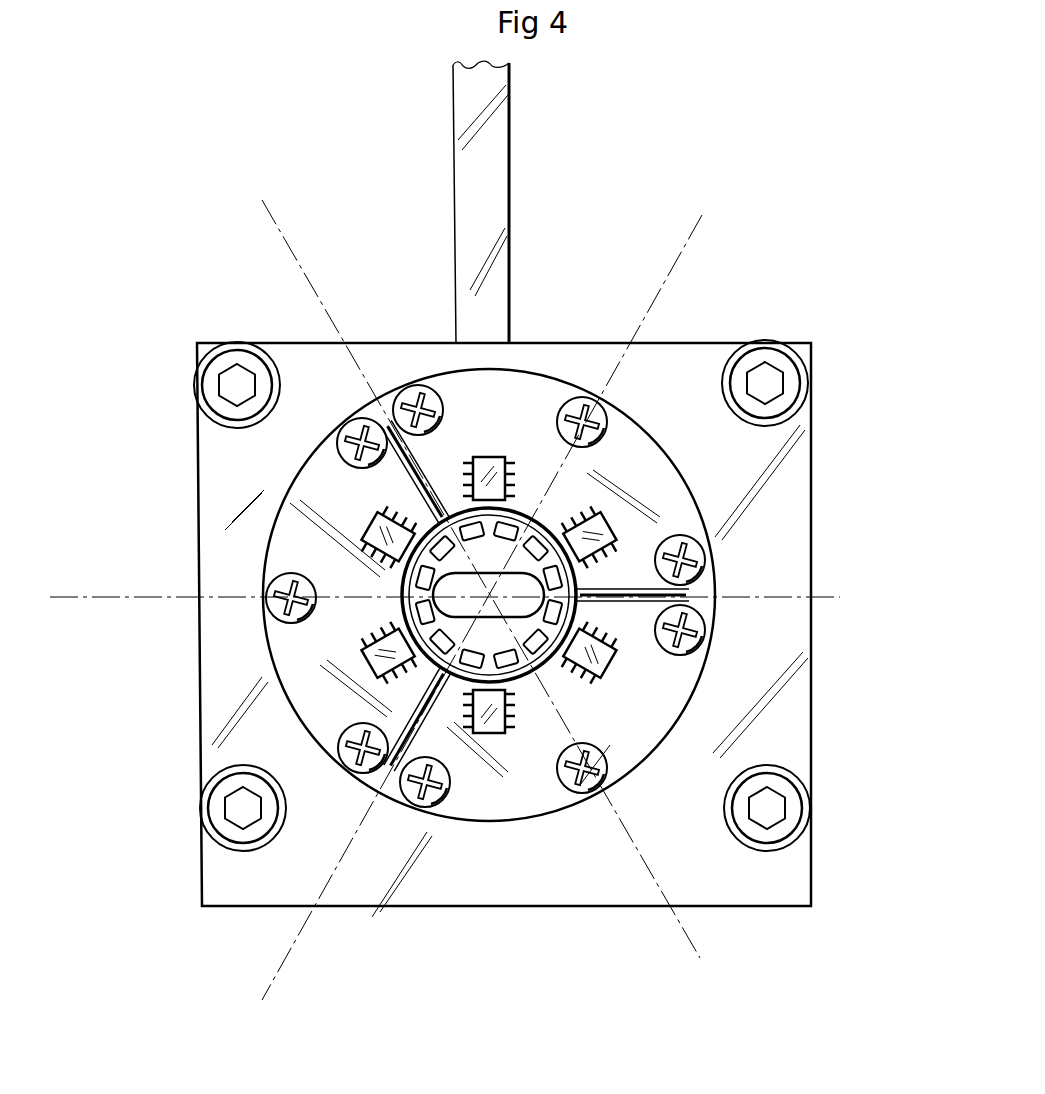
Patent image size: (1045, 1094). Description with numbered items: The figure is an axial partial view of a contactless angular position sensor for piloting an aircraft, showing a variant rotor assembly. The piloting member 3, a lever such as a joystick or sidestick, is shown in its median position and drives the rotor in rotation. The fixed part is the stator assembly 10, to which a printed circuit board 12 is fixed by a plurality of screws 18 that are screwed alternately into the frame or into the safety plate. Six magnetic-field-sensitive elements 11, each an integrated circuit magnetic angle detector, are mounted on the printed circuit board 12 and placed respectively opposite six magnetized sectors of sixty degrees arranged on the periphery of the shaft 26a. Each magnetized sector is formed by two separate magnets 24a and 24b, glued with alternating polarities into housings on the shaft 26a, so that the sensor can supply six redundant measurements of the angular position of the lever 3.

The piloting member 3 is at (494, 130).
The stator assembly 10 is at (832, 432).
The magnetic-field-sensitive element 11 is at (600, 660).
The printed circuit board 12 is at (665, 478).
The screws 18 is at (412, 383).
The magnet 24a is at (462, 502).
The magnet 24b is at (530, 508).
The shaft 26a is at (555, 695).